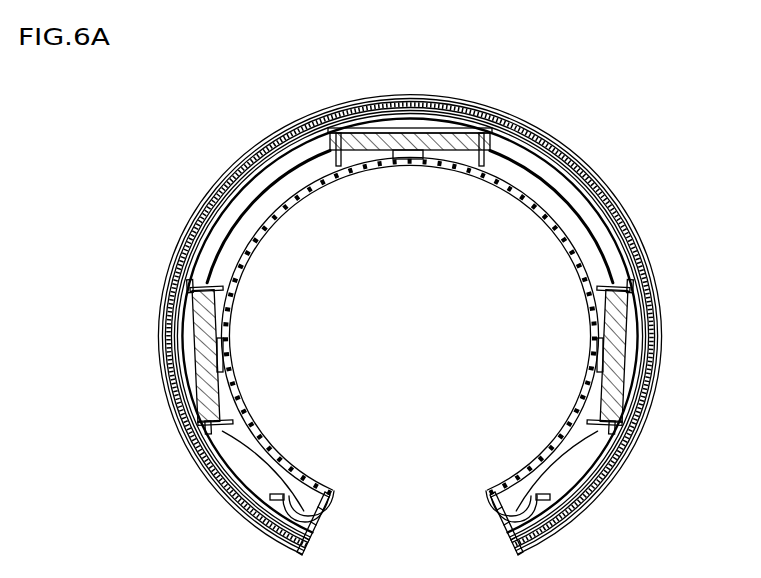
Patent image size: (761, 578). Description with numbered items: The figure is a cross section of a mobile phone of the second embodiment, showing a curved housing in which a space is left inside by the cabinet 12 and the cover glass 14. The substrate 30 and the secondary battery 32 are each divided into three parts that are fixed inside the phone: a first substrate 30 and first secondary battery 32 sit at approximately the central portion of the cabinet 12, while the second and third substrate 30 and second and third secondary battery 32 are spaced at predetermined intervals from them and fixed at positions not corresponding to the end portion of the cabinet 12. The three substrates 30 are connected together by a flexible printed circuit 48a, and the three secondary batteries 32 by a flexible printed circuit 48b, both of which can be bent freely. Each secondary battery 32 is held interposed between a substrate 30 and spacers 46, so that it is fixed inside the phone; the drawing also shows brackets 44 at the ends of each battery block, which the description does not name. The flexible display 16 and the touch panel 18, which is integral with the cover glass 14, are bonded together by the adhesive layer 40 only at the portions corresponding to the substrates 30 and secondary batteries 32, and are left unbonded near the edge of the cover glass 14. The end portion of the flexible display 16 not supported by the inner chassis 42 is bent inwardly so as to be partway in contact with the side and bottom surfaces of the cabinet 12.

The cabinet 12 is at (500, 517).
The cover glass 14 is at (558, 530).
The flexible display 16 is at (540, 548).
The touch panel 18 is at (585, 506).
The substrate 30 is at (470, 103).
The secondary battery 32 is at (440, 152).
The adhesive layer 40 is at (412, 96).
The inner chassis 42 is at (583, 453).
The support post 44 is at (340, 168).
The spacer 46 is at (408, 161).
The flexible printed circuit 48a is at (224, 220).
The flexible printed circuit 48b is at (252, 210).